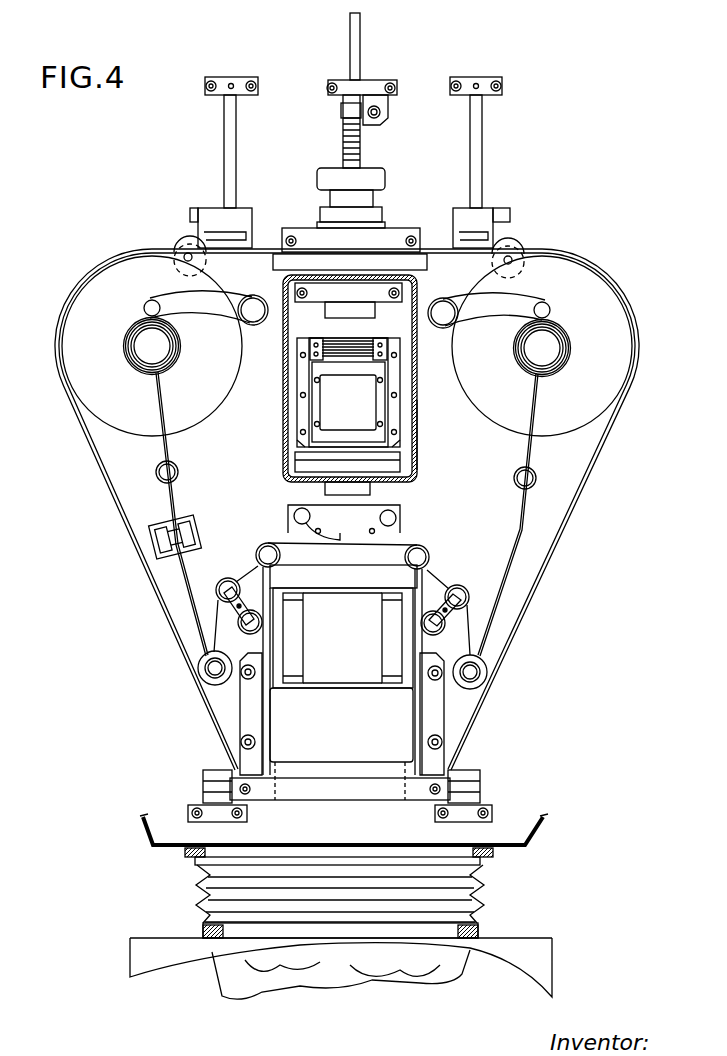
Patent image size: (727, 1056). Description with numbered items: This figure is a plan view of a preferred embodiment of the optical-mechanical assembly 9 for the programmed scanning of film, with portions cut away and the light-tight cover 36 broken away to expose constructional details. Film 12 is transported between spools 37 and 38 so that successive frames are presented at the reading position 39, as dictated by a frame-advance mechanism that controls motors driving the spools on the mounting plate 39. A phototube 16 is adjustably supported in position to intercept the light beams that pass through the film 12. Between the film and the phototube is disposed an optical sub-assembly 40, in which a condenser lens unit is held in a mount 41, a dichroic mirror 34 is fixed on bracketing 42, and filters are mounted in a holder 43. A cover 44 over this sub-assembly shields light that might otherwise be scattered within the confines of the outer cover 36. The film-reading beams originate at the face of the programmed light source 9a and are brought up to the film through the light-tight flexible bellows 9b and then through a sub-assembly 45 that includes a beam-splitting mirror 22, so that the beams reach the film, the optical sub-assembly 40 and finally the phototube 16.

The optical-mechanical assembly 9 is at (127, 566).
The programmed light source 9a is at (230, 985).
The light-tight flexible bellows 9b is at (200, 887).
The film 12 is at (547, 597).
The phototube 16 is at (380, 200).
The beam-splitting mirror 22 is at (357, 653).
The dichroic mirror 34 is at (364, 418).
The light-tight cover 36 is at (537, 830).
The spool 37 is at (80, 370).
The spool 38 is at (605, 398).
The reading position 39 is at (112, 462).
The optical sub-assembly 40 is at (269, 418).
The mount 41 is at (323, 467).
The bracketing 42 is at (312, 411).
The holder 43 is at (386, 357).
The cover 44 is at (412, 449).
The sub-assembly 45 is at (250, 690).